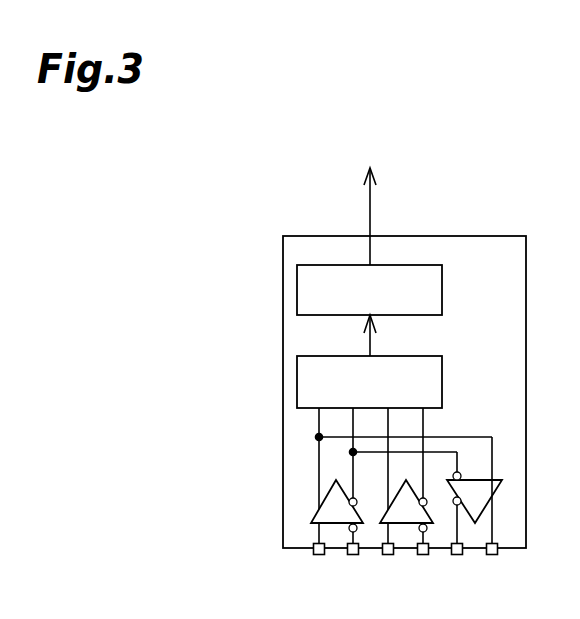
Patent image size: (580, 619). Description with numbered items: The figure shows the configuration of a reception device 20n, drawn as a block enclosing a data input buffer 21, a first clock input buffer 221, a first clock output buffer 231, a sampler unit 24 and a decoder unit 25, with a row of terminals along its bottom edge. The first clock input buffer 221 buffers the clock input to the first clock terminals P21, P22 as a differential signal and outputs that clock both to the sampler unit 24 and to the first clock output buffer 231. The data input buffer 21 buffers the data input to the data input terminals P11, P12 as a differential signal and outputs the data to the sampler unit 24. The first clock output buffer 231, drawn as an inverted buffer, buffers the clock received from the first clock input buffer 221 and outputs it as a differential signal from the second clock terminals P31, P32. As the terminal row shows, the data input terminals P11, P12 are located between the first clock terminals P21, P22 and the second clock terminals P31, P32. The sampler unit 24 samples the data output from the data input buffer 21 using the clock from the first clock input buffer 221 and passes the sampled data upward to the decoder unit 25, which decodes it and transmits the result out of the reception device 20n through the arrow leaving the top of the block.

The reception device 20n is at (498, 236).
The decoder unit 25 is at (442, 289).
The sampler unit 24 is at (442, 379).
The first clock input buffer 221 is at (314, 512).
The data input buffer 21 is at (383, 512).
The first clock output buffer 231 is at (497, 488).
The first clock terminal P21 is at (317, 555).
The first clock terminal P22 is at (351, 555).
The data input terminal P11 is at (386, 555).
The data input terminal P12 is at (421, 555).
The second clock terminal P32 is at (455, 555).
The second clock terminal P31 is at (490, 555).